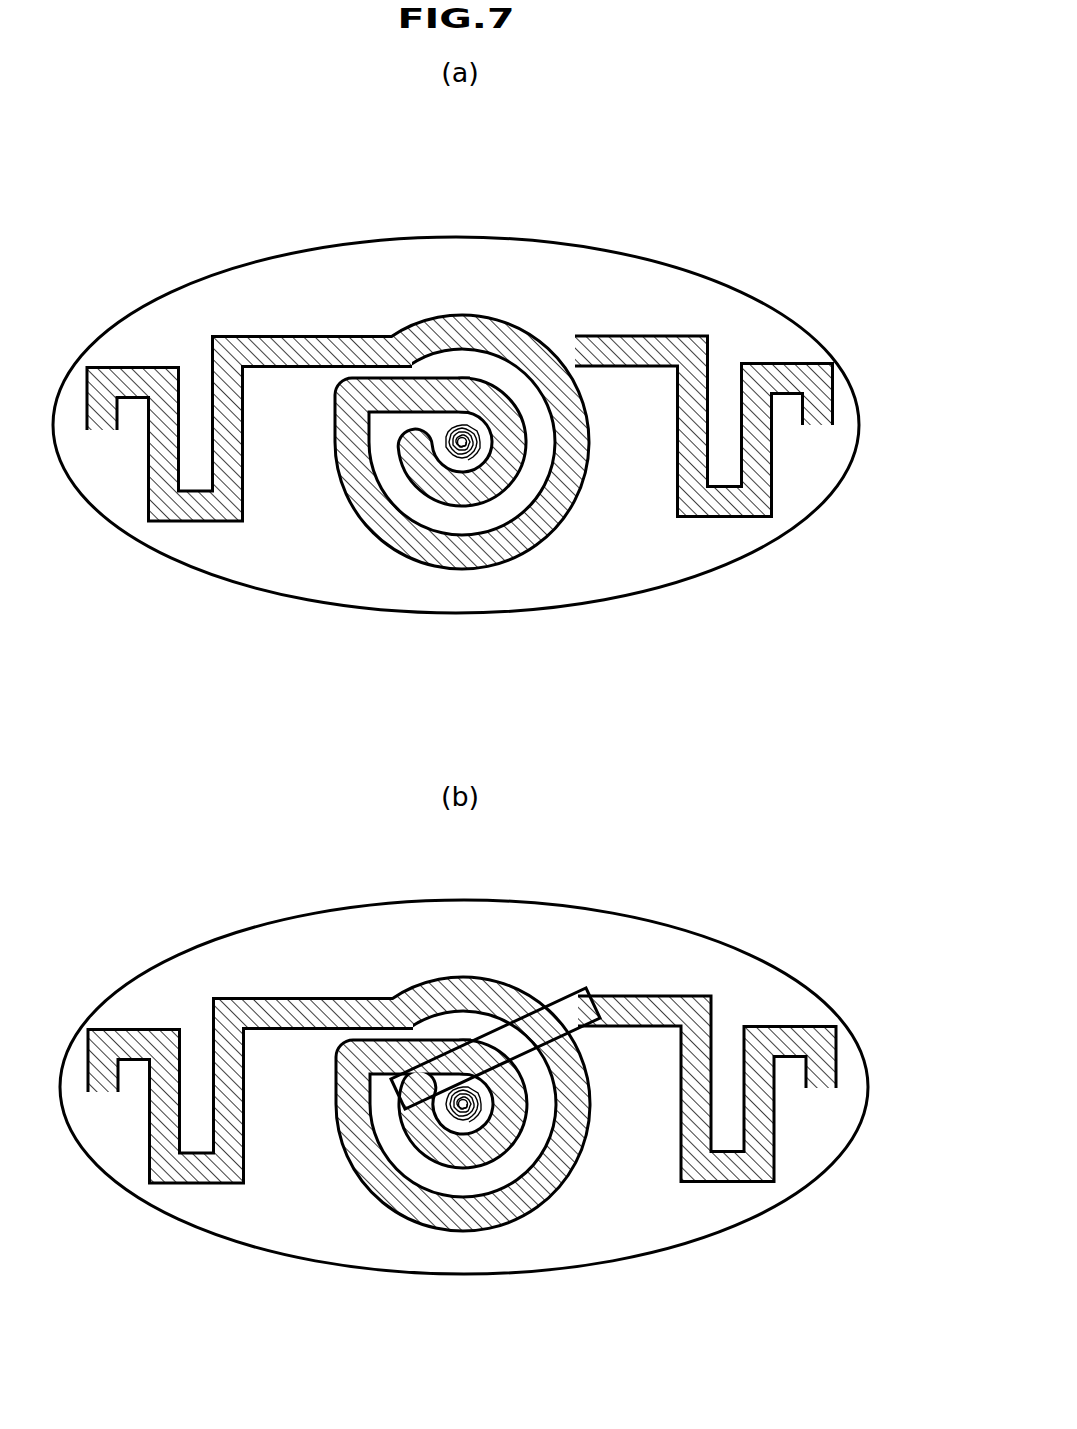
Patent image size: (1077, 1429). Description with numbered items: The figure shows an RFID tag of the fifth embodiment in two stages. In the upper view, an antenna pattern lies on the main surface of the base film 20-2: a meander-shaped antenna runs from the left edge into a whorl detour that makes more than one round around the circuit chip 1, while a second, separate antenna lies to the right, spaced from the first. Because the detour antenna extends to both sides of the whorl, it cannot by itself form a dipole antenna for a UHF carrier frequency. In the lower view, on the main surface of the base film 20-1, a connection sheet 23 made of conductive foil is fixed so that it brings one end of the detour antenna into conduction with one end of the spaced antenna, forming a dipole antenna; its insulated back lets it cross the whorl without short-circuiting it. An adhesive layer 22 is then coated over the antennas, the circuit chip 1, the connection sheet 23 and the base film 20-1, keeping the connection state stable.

The circuit chip 1 is at (558, 193).
The base film 20-1 is at (583, 1203).
The base film 20-2 is at (582, 535).
The adhesive layer 22 is at (410, 1070).
The connection sheet 23 is at (390, 1075).